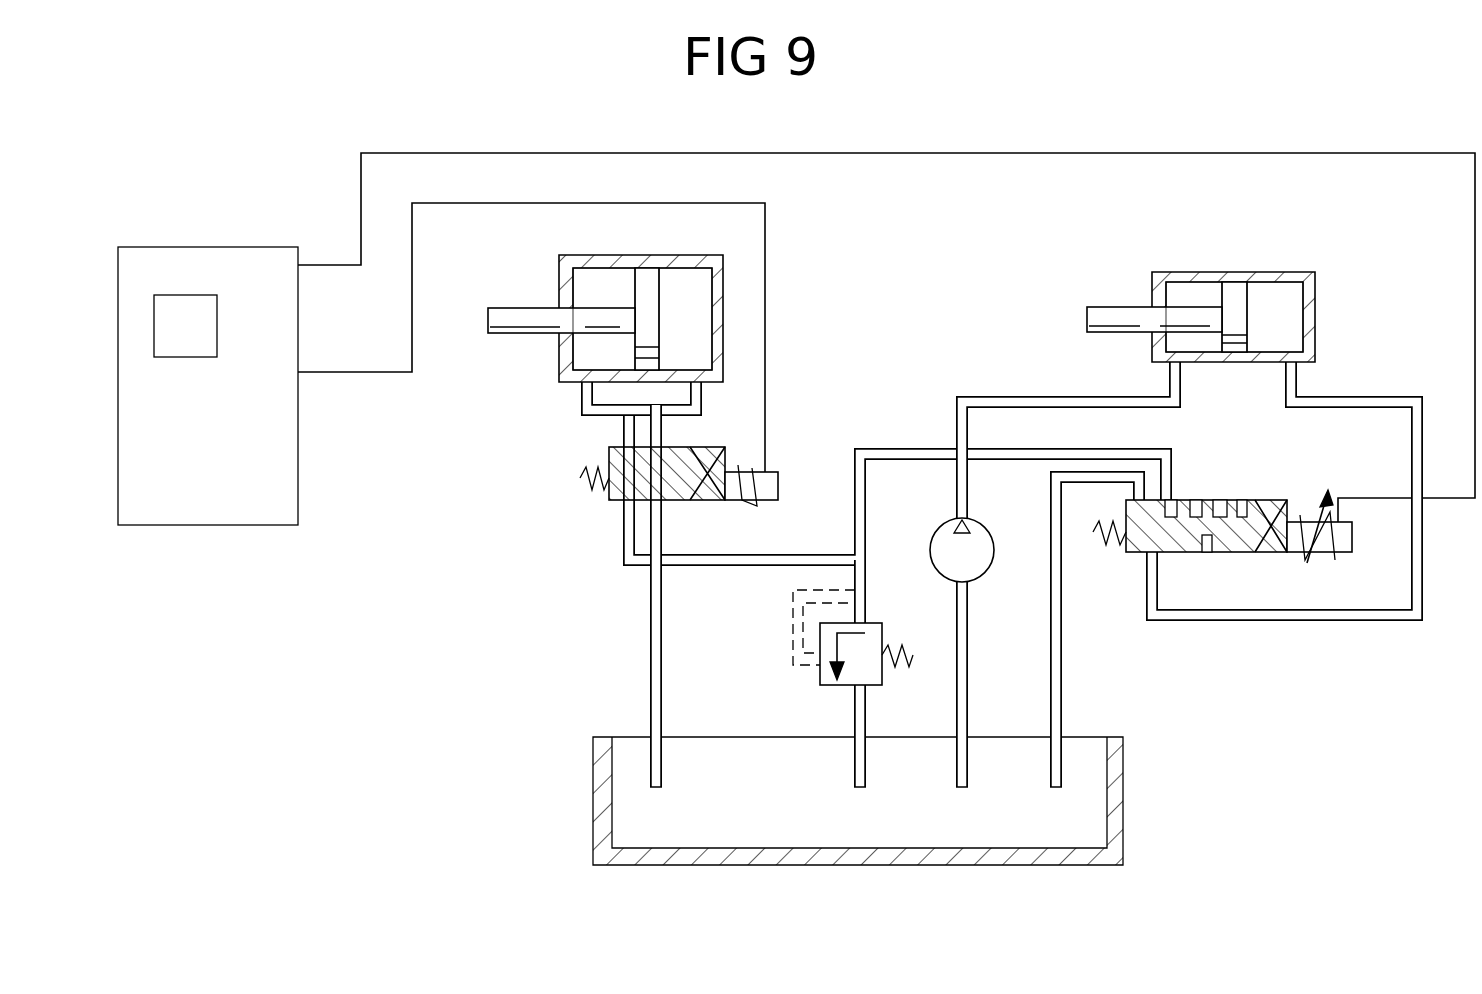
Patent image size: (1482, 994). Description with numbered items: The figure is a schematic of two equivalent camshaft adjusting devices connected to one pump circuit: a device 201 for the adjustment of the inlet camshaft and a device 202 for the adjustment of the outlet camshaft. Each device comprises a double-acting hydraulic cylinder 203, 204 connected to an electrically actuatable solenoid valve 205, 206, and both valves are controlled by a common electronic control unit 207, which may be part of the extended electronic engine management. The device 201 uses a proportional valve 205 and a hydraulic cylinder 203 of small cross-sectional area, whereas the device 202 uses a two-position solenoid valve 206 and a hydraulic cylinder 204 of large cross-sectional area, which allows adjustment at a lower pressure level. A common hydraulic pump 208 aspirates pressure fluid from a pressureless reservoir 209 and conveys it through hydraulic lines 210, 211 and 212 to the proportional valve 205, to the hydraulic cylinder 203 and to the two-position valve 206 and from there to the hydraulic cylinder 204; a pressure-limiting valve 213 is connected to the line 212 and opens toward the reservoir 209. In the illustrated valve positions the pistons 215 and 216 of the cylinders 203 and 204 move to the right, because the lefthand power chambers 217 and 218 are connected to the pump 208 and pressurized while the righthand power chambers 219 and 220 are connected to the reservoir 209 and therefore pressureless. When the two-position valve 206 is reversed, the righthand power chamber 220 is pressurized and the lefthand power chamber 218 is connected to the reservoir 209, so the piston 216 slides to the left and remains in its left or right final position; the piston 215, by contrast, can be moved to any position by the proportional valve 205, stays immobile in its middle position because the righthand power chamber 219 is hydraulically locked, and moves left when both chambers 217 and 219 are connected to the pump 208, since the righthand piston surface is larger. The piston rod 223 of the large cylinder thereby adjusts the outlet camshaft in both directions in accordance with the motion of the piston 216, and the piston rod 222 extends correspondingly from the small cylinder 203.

The device for the adjustment of the inlet camshaft 201 is at (1253, 397).
The device for the adjustment of the outlet camshaft 202 is at (627, 380).
The hydraulic cylinder 203 is at (1275, 277).
The hydraulic cylinder 204 is at (676, 258).
The proportional valve 205 is at (1132, 553).
The two-position solenoid valve 206 is at (620, 500).
The electronic control unit 207 is at (255, 527).
The hydraulic pump 208 is at (993, 568).
The reservoir 209 is at (1113, 797).
The hydraulic line 210 is at (1168, 443).
The hydraulic line 211 is at (992, 397).
The hydraulic line 212 is at (852, 512).
The pressure-limiting valve 213 is at (820, 675).
The piston 215 is at (1235, 292).
The piston 216 is at (647, 273).
The lefthand power chamber 217 is at (1187, 290).
The lefthand power chamber 218 is at (590, 296).
The righthand power chamber 219 is at (1288, 300).
The righthand power chamber 220 is at (695, 305).
The piston rod 222 is at (1127, 322).
The piston rod 223 is at (540, 327).